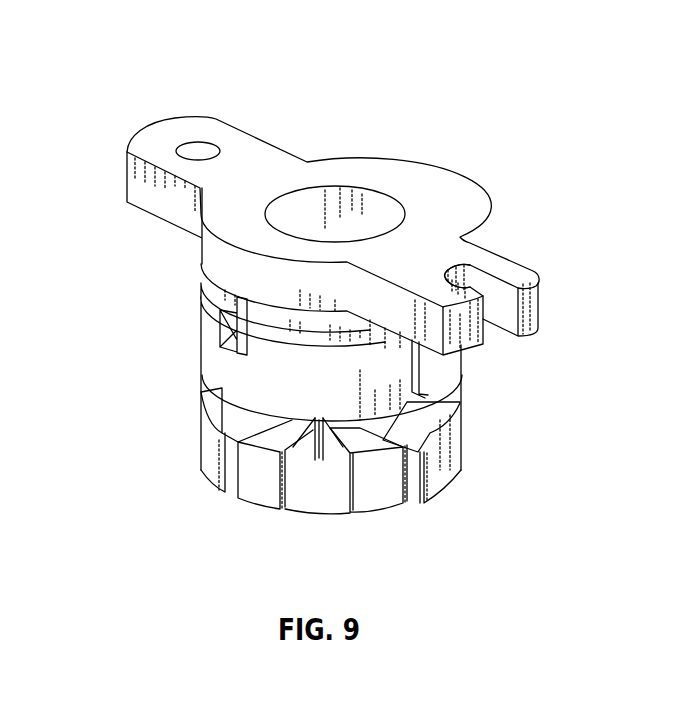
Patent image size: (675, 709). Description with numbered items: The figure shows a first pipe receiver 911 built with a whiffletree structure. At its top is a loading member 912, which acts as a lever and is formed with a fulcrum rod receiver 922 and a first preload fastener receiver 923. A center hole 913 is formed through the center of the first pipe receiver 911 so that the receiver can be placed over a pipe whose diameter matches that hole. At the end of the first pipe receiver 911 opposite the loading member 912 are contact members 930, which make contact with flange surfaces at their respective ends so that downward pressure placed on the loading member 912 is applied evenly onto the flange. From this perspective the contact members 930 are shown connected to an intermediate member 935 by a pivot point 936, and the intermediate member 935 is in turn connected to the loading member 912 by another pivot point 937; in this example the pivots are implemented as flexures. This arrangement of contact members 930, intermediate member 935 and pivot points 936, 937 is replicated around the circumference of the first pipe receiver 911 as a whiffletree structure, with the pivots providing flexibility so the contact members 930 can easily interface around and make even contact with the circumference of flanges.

The first pipe receiver 911 is at (120, 65).
The loading member 912 is at (438, 218).
The center hole 913 is at (380, 185).
The fulcrum rod receiver 922 is at (515, 340).
The first preload fastener receiver 923 is at (222, 138).
The contact members 930 is at (477, 522).
The intermediate member 935 is at (200, 338).
The pivot point 936 is at (318, 462).
The pivot point 937 is at (220, 316).